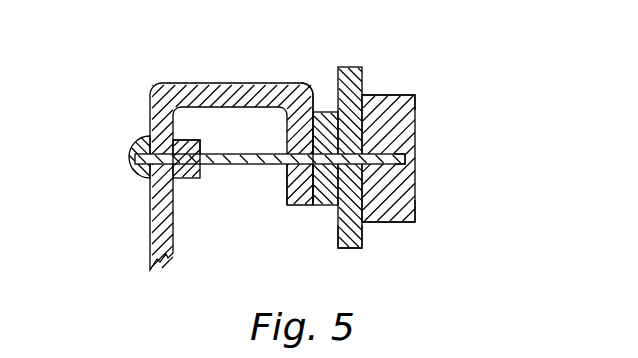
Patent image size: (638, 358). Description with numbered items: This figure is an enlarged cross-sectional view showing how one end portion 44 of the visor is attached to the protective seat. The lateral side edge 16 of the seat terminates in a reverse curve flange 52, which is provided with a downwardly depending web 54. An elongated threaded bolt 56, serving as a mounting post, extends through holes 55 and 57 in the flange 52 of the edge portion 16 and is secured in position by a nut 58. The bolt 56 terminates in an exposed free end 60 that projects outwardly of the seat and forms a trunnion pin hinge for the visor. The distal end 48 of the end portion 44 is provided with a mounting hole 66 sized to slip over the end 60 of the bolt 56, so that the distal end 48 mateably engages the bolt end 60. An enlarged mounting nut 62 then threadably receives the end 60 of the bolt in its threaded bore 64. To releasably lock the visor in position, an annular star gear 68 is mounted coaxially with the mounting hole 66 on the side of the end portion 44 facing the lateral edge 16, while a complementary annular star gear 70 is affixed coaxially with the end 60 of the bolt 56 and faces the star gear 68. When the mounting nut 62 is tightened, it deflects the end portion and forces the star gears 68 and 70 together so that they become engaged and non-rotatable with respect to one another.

The lateral side edge 16 is at (150, 239).
The end portion 44 is at (362, 70).
The distal end 48 is at (350, 250).
The reverse curve flange 52 is at (178, 84).
The downwardly depending web 54 is at (283, 132).
The hole 55 is at (150, 105).
The threaded bolt 56 is at (242, 167).
The hole 57 is at (284, 168).
The nut 58 is at (188, 142).
The exposed free end 60 is at (415, 125).
The mounting nut 62 is at (410, 200).
The threaded bore 64 is at (405, 160).
The mounting hole 66 is at (412, 96).
The annular star gear 68 is at (323, 112).
The complementary annular star gear 70 is at (313, 88).